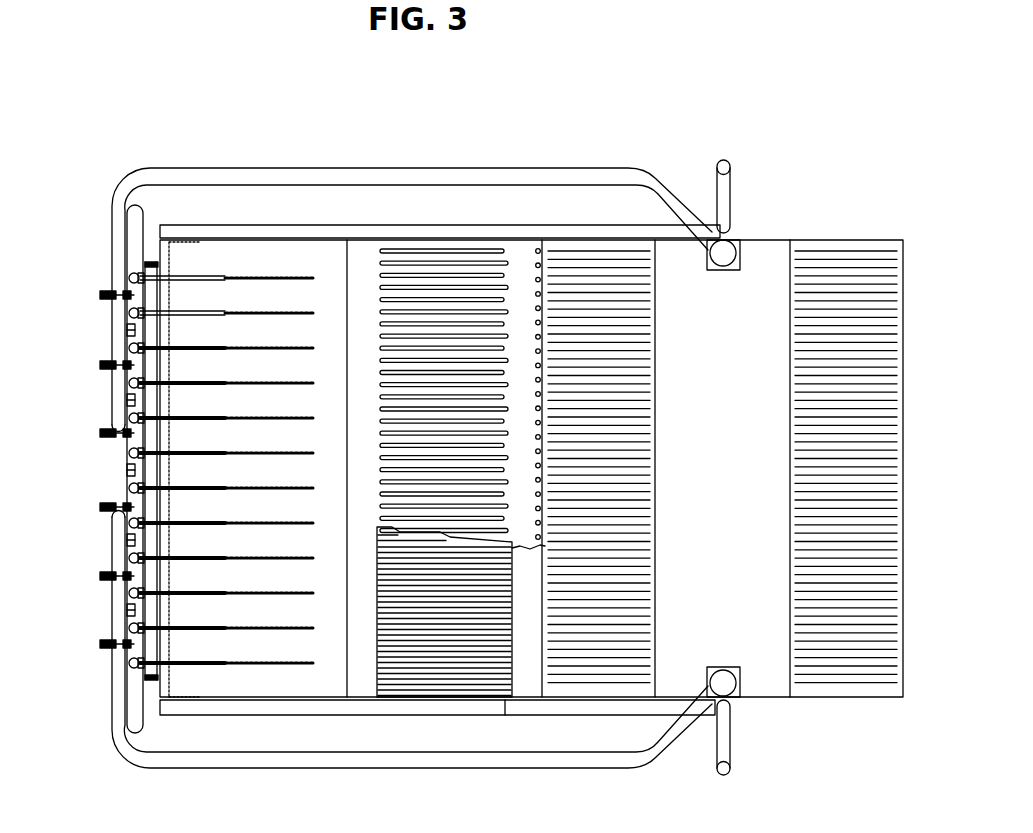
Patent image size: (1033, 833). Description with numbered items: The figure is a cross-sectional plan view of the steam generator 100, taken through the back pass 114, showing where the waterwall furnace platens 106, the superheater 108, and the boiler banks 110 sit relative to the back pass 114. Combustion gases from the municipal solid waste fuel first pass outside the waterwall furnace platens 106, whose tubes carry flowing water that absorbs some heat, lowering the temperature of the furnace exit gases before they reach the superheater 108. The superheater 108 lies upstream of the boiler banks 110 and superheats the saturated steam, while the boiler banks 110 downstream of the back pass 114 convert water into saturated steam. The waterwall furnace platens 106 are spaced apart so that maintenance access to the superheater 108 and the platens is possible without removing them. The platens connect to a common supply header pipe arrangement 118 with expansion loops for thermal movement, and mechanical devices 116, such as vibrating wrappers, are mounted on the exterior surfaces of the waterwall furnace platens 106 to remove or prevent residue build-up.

The steam generator 100 is at (636, 124).
The waterwall furnace platens 106 is at (247, 278).
The superheater 108 is at (434, 663).
The boiler banks 110 is at (593, 658).
The back pass 114 is at (522, 303).
The mechanical devices 116 is at (100, 295).
The common supply header pipe arrangement 118 is at (110, 695).